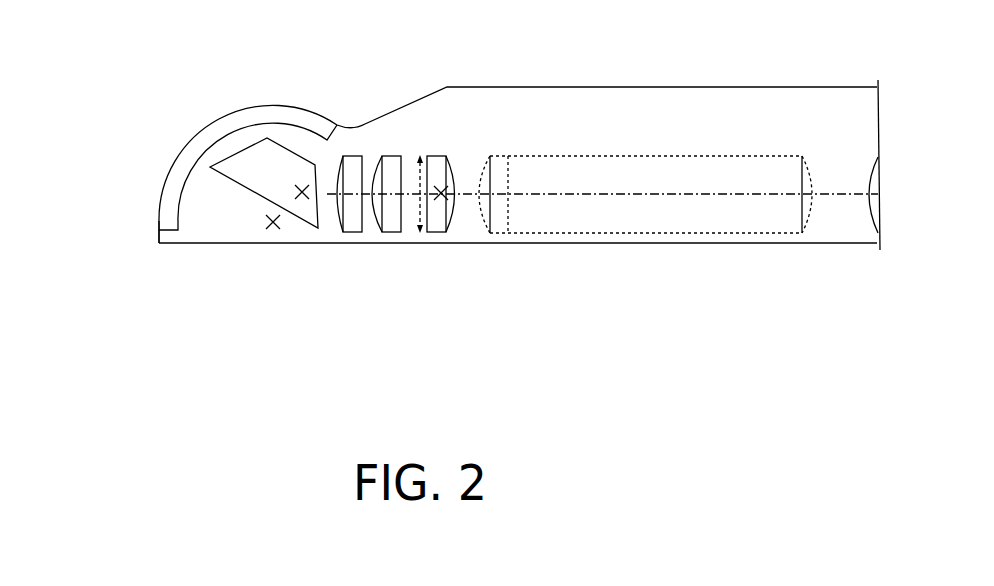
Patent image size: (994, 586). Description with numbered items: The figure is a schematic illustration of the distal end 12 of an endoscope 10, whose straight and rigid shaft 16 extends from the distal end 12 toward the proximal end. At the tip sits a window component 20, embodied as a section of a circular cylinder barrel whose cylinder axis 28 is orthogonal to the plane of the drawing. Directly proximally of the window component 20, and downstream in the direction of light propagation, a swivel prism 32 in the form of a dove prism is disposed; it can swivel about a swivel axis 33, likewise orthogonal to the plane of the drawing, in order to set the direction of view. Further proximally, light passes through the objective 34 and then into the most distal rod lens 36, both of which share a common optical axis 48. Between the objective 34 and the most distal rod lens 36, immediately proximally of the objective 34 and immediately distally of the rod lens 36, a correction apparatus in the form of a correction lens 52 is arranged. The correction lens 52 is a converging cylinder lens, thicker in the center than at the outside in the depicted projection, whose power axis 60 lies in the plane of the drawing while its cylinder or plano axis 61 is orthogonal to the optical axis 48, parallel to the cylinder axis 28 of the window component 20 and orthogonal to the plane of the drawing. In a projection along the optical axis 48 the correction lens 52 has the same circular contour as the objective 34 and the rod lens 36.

The endoscope 10 is at (180, 89).
The distal end 12 is at (489, 191).
The shaft 16 is at (692, 90).
The window component 20 is at (158, 220).
The cylinder axis of the window component 28 is at (275, 229).
The swivel prism 32 is at (255, 187).
The swivel axis 33 is at (302, 200).
The objective 34 is at (387, 232).
The most distal rod lens 36 is at (692, 232).
The optical axis 48 is at (837, 193).
The correction lens 52 is at (443, 232).
The power axis 60 is at (418, 182).
The plano axis 61 is at (440, 182).